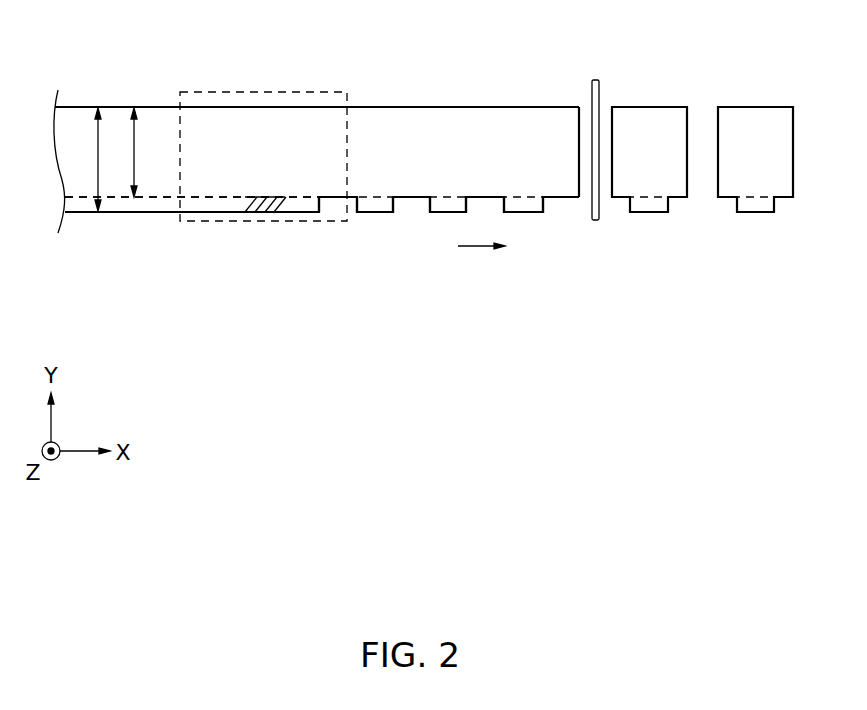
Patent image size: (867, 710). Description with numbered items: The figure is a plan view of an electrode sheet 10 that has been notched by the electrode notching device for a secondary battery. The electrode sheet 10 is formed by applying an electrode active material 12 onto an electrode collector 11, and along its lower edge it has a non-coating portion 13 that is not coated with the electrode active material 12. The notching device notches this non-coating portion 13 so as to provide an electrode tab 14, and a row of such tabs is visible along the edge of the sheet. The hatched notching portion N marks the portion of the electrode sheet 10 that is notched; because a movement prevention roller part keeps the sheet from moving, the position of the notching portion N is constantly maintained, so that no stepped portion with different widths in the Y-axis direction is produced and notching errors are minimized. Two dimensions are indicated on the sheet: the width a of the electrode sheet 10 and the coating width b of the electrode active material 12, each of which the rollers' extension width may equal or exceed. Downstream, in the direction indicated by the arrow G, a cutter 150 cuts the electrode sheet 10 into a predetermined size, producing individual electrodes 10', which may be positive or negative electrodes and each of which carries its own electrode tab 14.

The electrode sheet 10 is at (316, 134).
The electrodes 10' is at (702, 118).
The electrode collector 11 is at (120, 205).
The electrode active material 12 is at (82, 182).
The non-coating portion 13 is at (152, 222).
The electrode tab 14 is at (381, 209).
The notching portion N is at (262, 214).
The cutter 150 is at (594, 222).
The width of the electrode sheet a is at (105, 159).
The coating width of the electrode active material b is at (141, 152).
The feed direction G is at (481, 261).